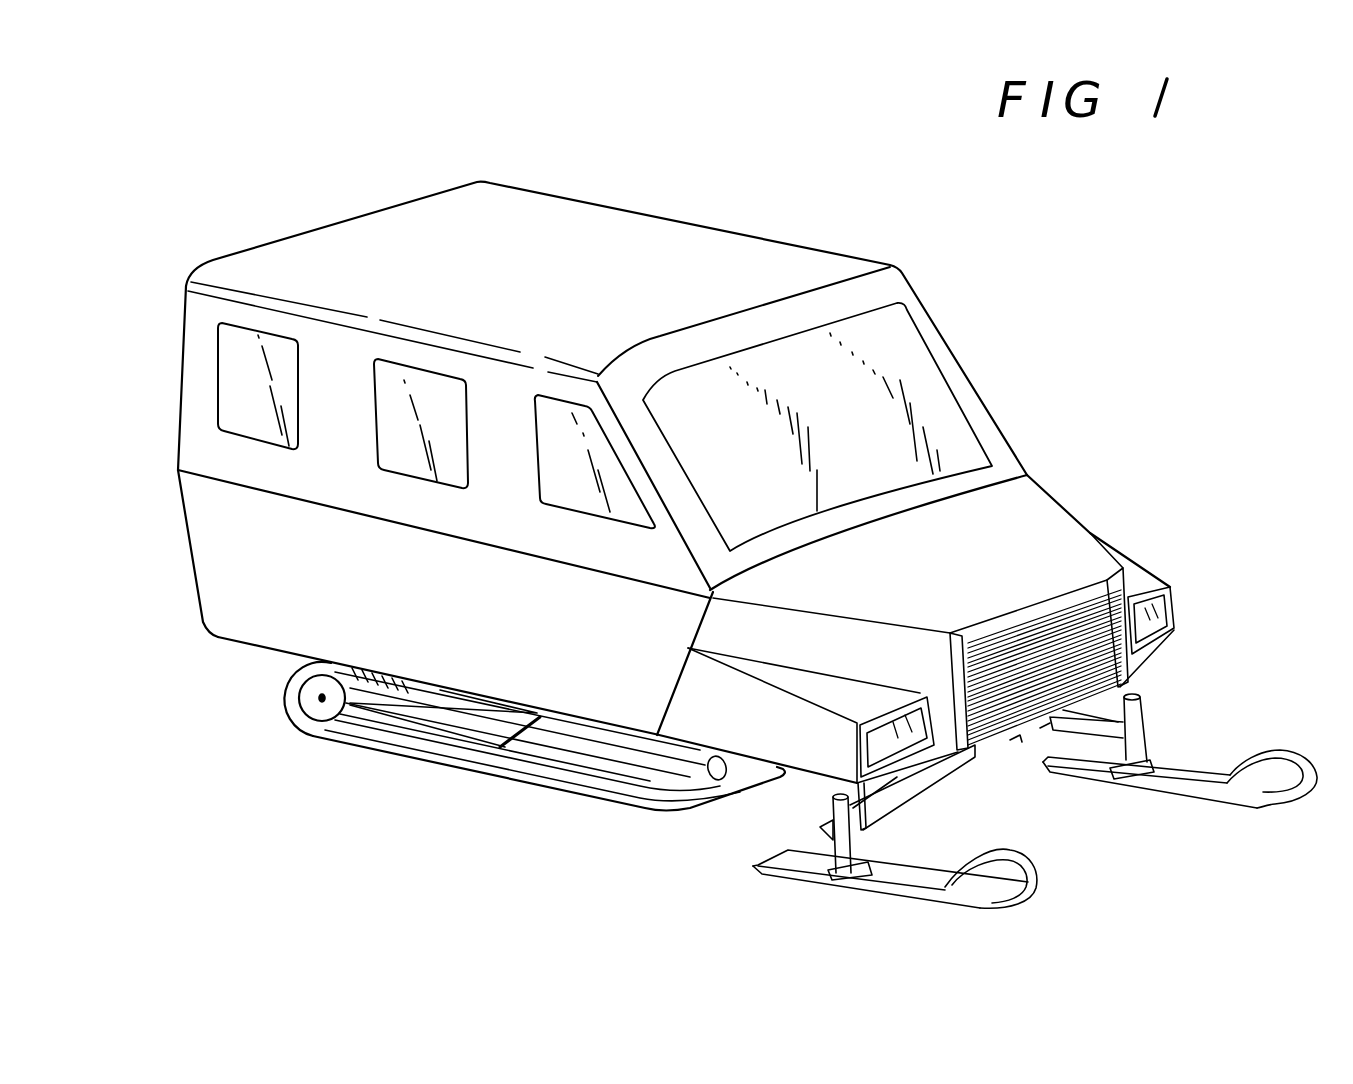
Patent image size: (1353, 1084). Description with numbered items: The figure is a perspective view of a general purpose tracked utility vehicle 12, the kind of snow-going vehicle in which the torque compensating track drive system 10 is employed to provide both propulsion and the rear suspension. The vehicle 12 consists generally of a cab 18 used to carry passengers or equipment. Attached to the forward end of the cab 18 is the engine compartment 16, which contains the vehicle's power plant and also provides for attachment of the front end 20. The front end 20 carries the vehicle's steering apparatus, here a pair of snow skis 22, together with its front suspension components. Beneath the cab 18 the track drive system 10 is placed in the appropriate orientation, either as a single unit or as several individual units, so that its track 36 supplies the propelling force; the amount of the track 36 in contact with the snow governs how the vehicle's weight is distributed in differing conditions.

The torque compensating track drive system 10 is at (320, 762).
The general purpose tracked utility vehicle 12 is at (953, 298).
The engine compartment 16 is at (1040, 480).
The cab 18 is at (265, 637).
The front end 20 is at (1168, 700).
The snow skis 22 is at (1180, 797).
The track 36 is at (445, 765).